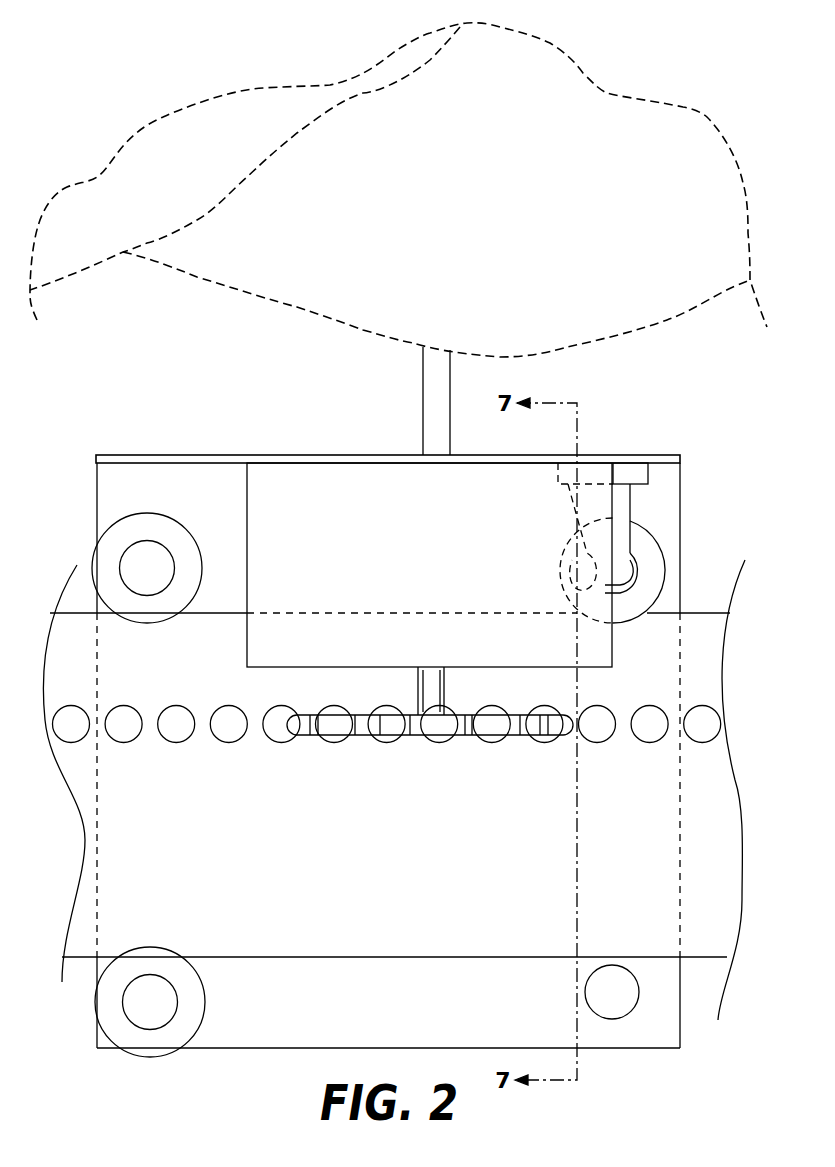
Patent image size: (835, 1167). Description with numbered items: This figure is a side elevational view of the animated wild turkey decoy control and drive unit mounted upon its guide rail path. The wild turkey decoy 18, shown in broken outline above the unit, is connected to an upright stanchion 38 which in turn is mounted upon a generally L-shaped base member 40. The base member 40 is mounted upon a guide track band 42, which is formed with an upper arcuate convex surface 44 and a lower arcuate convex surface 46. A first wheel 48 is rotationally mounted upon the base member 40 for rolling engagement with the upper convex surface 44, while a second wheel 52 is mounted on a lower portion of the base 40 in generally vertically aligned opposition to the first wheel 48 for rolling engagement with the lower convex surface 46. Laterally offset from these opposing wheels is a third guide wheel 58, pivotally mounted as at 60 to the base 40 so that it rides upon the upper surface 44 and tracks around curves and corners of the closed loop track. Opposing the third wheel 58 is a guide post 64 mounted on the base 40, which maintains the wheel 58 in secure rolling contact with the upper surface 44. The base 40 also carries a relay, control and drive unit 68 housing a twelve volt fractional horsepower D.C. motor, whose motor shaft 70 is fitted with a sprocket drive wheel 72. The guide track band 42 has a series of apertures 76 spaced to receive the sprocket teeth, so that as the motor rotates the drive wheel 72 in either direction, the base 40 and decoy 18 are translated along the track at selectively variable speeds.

The wild turkey decoy 18 is at (604, 92).
The upright stanchion 38 is at (423, 417).
The base member 40 is at (677, 458).
The guide track band 42 is at (743, 807).
The upper convex surface 44 is at (698, 613).
The lower convex surface 46 is at (82, 958).
The first wheel 48 is at (100, 540).
The second wheel 52 is at (153, 1058).
The third guide wheel 58 is at (632, 518).
The pivotal mounting 60 is at (623, 460).
The guide post 64 is at (640, 988).
The relay, control and drive unit 68 is at (396, 556).
The motor shaft 70 is at (447, 682).
The sprocket drive wheel 72 is at (360, 735).
The apertures 76 is at (177, 743).